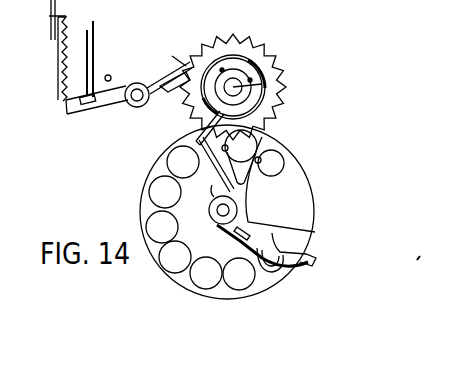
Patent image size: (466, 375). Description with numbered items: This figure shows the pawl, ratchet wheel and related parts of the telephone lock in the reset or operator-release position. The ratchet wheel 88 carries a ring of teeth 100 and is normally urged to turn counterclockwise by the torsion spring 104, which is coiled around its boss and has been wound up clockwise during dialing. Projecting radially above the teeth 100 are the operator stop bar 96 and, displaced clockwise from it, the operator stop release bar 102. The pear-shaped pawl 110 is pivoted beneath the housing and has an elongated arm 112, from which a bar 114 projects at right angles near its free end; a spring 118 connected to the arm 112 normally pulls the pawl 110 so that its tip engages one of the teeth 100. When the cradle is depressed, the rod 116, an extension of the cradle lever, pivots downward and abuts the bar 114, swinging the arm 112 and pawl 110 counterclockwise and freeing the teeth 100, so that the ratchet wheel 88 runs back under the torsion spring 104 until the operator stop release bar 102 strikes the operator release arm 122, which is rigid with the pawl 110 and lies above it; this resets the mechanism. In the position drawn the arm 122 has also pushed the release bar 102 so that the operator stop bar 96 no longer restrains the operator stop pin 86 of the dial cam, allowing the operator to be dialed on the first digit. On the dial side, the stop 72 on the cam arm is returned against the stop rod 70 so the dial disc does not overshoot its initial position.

The stop rod 70 is at (311, 233).
The stop 72 is at (229, 298).
The operator stop pin 86 is at (268, 176).
The ratchet wheel 88 is at (283, 61).
The operator stop bar 96 is at (208, 121).
The teeth 100 is at (280, 108).
The operator stop release bar 102 is at (202, 30).
The torsion spring 104 is at (283, 86).
The pawl 110 is at (173, 90).
The elongated arm 112 is at (67, 110).
The bar 114 is at (93, 106).
The rod 116 is at (95, 63).
The spring 118 is at (61, 66).
The operator release arm 122 is at (176, 72).